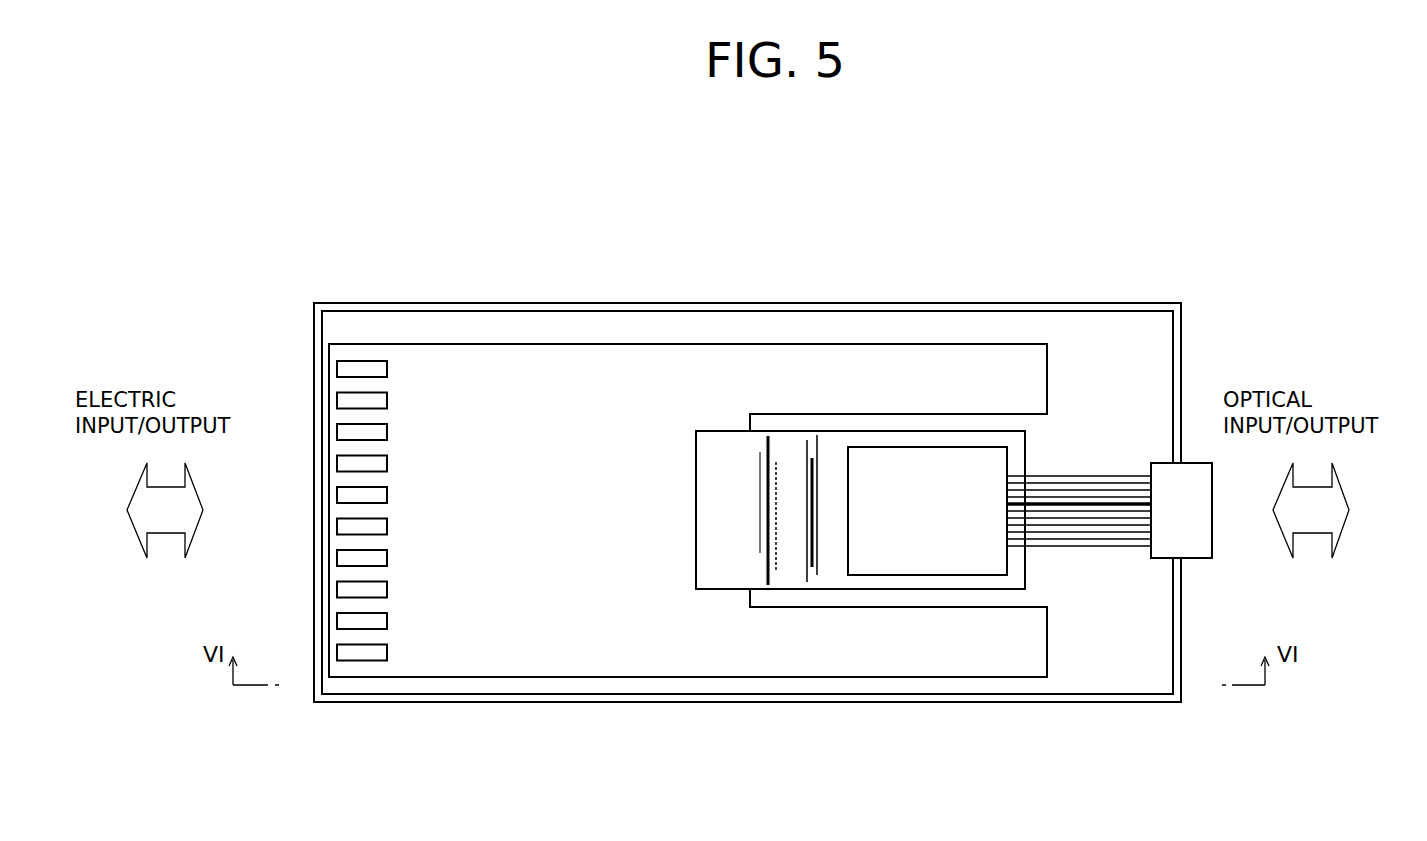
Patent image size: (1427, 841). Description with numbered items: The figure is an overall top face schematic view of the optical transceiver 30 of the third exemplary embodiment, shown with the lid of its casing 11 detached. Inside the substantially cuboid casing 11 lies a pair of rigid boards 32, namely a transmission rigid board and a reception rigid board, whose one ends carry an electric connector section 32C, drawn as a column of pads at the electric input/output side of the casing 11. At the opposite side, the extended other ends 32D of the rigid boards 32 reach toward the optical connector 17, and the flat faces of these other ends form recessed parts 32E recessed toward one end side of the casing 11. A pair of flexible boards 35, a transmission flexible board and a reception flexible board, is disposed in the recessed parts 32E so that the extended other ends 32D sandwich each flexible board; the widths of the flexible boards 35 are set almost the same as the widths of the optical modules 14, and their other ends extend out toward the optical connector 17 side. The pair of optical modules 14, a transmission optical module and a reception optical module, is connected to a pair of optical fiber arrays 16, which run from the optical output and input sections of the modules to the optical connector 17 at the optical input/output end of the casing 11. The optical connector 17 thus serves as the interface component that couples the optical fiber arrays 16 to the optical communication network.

The optical transceiver 30 is at (1082, 218).
The casing 11 is at (779, 303).
The rigid boards 32 is at (609, 365).
The electric connector section 32C is at (413, 328).
The extended other ends 32D is at (938, 365).
The recessed parts 32E is at (843, 412).
The flexible boards 35 is at (782, 578).
The optical modules 14 is at (931, 553).
The optical fiber arrays 16 is at (1060, 522).
The optical connector 17 is at (1163, 546).